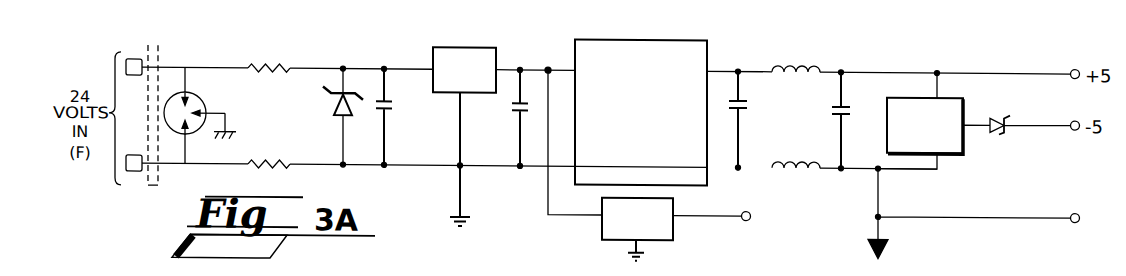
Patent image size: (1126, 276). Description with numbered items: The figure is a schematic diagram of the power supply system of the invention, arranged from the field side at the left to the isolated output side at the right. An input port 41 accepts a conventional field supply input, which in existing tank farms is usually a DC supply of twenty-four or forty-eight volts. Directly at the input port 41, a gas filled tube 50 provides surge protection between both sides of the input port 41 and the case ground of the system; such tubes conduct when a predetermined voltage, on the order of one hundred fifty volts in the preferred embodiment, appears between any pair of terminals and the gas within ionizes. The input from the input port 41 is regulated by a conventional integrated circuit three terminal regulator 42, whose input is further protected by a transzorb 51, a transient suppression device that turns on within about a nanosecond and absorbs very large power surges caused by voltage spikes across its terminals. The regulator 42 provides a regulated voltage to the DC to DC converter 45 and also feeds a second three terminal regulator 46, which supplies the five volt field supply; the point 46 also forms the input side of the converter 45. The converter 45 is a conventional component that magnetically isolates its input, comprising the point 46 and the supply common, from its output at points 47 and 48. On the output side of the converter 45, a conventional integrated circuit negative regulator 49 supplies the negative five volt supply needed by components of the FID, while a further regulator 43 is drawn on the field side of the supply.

The input port 41 is at (154, 45).
The three terminal regulator 42 is at (484, 44).
The floating +5 volt regulator 43 is at (661, 235).
The DC to DC converter 45 is at (633, 35).
The second three terminal regulator 46 is at (552, 57).
The output point 47 is at (738, 64).
The output point 48 is at (738, 165).
The negative regulator 49 is at (957, 92).
The gas filled tube 50 is at (202, 95).
The transzorb 51 is at (334, 92).